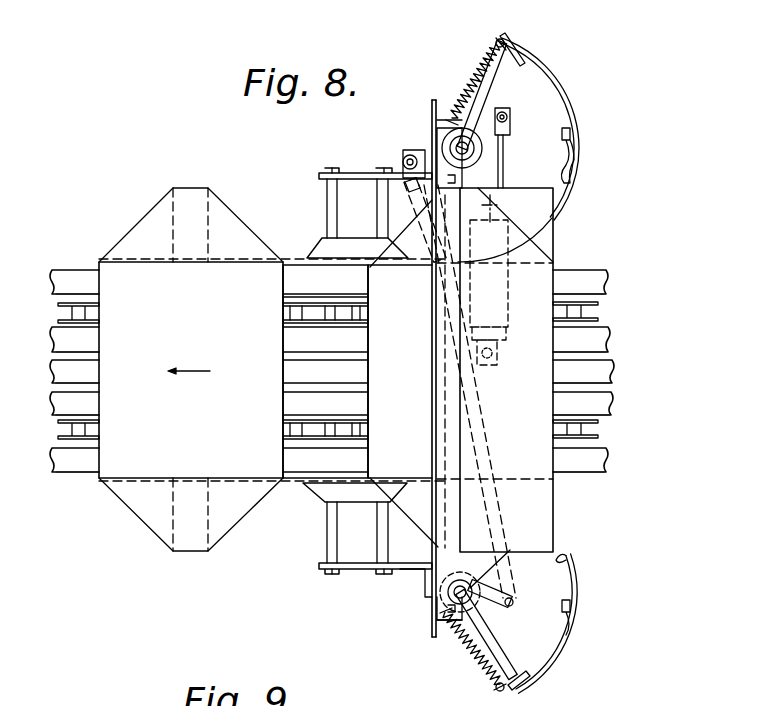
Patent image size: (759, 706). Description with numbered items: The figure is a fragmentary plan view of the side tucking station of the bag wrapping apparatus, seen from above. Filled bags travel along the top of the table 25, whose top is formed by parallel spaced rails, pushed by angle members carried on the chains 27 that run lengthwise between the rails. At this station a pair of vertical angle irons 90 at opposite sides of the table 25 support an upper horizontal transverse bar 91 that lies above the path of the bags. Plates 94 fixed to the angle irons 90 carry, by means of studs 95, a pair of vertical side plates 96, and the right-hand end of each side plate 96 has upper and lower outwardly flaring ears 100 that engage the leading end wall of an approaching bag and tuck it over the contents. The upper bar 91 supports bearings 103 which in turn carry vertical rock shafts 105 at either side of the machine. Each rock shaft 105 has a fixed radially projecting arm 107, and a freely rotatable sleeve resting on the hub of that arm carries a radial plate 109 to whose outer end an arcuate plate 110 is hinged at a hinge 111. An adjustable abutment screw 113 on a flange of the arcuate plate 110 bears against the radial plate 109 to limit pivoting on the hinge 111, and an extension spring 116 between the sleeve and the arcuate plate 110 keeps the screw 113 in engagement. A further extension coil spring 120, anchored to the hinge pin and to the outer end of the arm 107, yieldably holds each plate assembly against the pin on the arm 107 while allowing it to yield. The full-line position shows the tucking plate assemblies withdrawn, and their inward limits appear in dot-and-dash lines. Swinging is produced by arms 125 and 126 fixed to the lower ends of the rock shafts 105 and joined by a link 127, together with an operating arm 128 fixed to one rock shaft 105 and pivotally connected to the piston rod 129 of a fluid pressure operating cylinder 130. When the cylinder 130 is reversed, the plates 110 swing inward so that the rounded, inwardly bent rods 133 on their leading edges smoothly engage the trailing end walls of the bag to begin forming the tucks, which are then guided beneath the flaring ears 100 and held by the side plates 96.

The table 25 is at (618, 262).
The chains 27 is at (588, 436).
The vertical angle irons 90 is at (430, 596).
The upper horizontal transverse angle iron or bar 91 is at (432, 422).
The plates 94 is at (345, 172).
The studs 95 is at (378, 212).
The vertical side plates 96 is at (291, 258).
The outwardly flaring ears 100 is at (420, 262).
The bearings 103 is at (465, 566).
The vertical rock shafts 105 is at (470, 150).
The radially projecting arm 107 is at (456, 105).
The radial plate 109 is at (498, 90).
The arcuate plate 110 is at (556, 80).
The hinge 111 is at (530, 65).
The adjustable abutment screw 113 is at (505, 40).
The extension spring 116 is at (482, 60).
The extension coil spring 120 is at (476, 78).
The arm 125 is at (404, 148).
The arm 126 is at (512, 586).
The link 127 is at (475, 395).
The operating arm 128 is at (510, 115).
The operating piston rod 129 is at (504, 172).
The fluid pressure operating cylinder 130 is at (505, 300).
The rods 133 is at (570, 142).